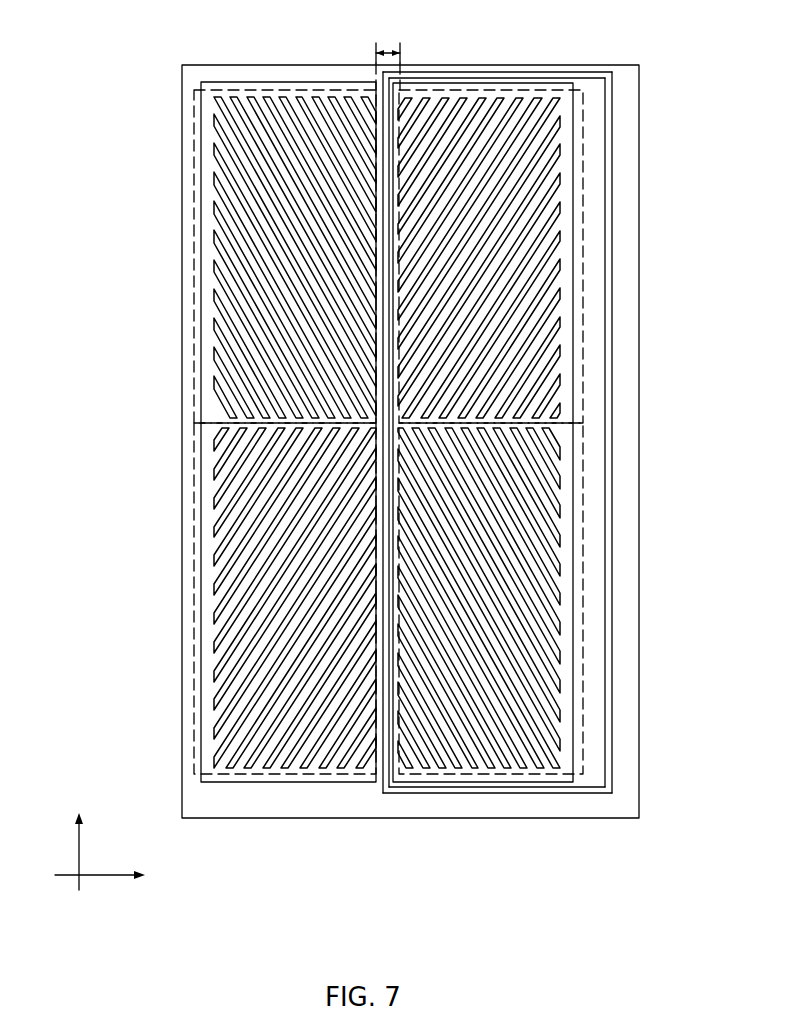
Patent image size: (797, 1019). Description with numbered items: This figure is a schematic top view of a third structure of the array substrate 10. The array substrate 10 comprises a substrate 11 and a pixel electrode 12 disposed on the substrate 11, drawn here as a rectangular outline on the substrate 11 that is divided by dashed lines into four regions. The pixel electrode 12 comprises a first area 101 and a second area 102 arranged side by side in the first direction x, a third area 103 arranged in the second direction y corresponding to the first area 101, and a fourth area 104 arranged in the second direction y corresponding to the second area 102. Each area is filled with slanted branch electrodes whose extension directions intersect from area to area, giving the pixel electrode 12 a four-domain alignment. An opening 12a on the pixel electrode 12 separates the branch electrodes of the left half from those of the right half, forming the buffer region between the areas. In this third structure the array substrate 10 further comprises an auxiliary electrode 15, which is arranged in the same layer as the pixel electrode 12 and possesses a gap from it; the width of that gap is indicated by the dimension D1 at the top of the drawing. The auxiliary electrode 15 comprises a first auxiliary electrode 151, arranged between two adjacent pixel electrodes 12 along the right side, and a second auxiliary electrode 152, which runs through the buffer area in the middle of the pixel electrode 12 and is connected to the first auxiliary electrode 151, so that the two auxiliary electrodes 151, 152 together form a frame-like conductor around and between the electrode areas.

The array substrate 10 is at (124, 47).
The substrate 11 is at (622, 712).
The pixel electrode 12 is at (553, 520).
The opening 12a is at (200, 490).
The first area 101 is at (190, 259).
The second area 102 is at (585, 262).
The third area 103 is at (190, 661).
The fourth area 104 is at (585, 651).
The auxiliary electrode 15 is at (516, 495).
The first auxiliary electrode 151 is at (626, 467).
The second auxiliary electrode 152 is at (383, 795).
The gap distance D1 is at (392, 53).